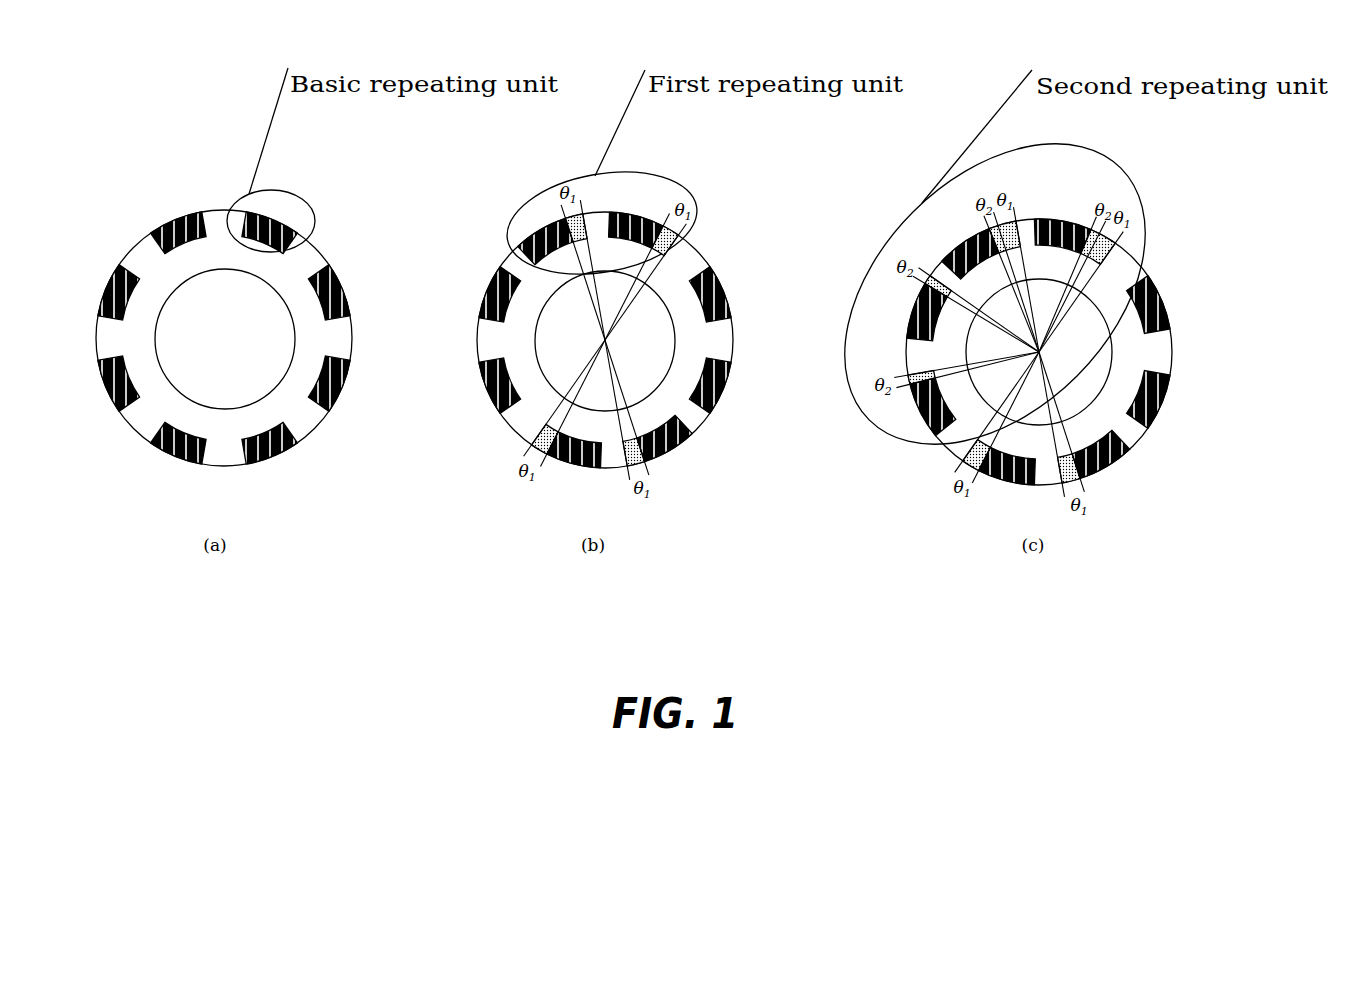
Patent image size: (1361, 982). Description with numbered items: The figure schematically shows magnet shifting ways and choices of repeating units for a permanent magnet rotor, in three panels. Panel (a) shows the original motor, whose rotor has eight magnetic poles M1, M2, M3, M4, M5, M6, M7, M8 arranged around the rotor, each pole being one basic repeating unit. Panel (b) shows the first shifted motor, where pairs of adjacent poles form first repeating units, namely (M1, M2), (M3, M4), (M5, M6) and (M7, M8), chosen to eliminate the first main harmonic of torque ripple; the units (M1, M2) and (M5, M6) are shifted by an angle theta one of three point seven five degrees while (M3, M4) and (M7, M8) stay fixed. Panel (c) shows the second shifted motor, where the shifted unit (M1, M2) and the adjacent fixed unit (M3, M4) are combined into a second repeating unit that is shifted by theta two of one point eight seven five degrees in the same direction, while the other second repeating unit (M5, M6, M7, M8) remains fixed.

The magnetic pole M1 is at (678, 238).
The magnetic pole M2 is at (586, 242).
The magnetic pole M3 is at (519, 303).
The magnetic pole M4 is at (519, 396).
The magnetic pole M5 is at (593, 453).
The magnetic pole M6 is at (686, 449).
The magnetic pole M7 is at (739, 392).
The magnetic pole M8 is at (739, 299).